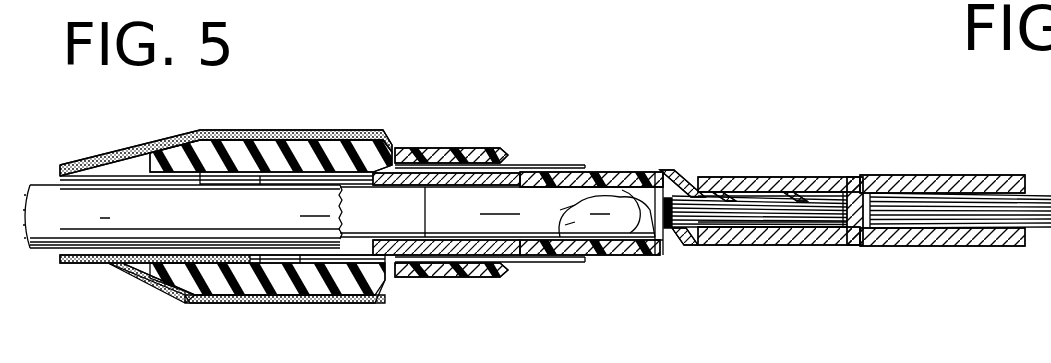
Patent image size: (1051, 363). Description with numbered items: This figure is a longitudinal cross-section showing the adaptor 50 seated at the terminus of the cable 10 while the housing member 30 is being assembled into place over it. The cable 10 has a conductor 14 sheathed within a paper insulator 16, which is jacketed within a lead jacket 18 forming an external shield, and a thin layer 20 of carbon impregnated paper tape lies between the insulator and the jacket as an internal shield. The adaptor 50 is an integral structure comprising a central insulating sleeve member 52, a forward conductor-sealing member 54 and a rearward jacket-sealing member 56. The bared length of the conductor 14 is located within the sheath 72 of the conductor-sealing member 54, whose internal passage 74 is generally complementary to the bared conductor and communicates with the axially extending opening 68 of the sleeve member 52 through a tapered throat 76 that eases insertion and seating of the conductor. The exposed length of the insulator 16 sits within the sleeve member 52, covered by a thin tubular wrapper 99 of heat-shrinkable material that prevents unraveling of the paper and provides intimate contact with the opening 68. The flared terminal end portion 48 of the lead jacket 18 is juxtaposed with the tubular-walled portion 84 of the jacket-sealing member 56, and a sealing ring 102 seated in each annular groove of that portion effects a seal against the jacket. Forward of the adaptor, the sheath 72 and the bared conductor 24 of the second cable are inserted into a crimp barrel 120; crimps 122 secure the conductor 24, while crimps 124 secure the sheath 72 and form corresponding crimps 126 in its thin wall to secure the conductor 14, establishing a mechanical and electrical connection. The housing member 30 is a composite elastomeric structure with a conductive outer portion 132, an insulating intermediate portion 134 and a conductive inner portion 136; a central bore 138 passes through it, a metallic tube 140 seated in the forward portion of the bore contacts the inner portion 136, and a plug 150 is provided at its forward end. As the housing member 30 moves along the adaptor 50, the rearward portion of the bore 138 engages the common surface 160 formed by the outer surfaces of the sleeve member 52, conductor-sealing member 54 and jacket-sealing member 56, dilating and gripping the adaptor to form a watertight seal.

The cable 10 is at (40, 180).
The conductor 14 is at (740, 228).
The paper insulator 16 is at (600, 258).
The lead jacket 18 is at (55, 225).
The layer of conductive material 20 is at (403, 219).
The conductor 24 is at (1003, 218).
The housing member 30 is at (190, 302).
The terminal end portion 48 is at (405, 175).
The adaptor 50 is at (590, 262).
The sleeve member 52 is at (645, 257).
The conductor-sealing member 54 is at (685, 190).
The jacket-sealing member 56 is at (470, 167).
The opening 68 is at (633, 200).
The sheath 72 is at (778, 232).
The passage 74 is at (818, 217).
The throat 76 is at (680, 246).
The tubular-walled portion 84 is at (430, 243).
The tubular wrapper 99 is at (584, 213).
The sealing ring 102 is at (412, 262).
The crimp barrel 120 is at (928, 246).
The crimps 122 is at (990, 180).
The crimps 124 is at (735, 178).
The crimps 126 is at (750, 195).
The conductive outer portion 132 is at (176, 165).
The insulating intermediate portion 134 is at (222, 150).
The conductive inner portion 136 is at (290, 178).
The central bore 138 is at (178, 245).
The metallic tube 140 is at (530, 164).
The plug 150 is at (497, 278).
The common surface 160 is at (604, 168).